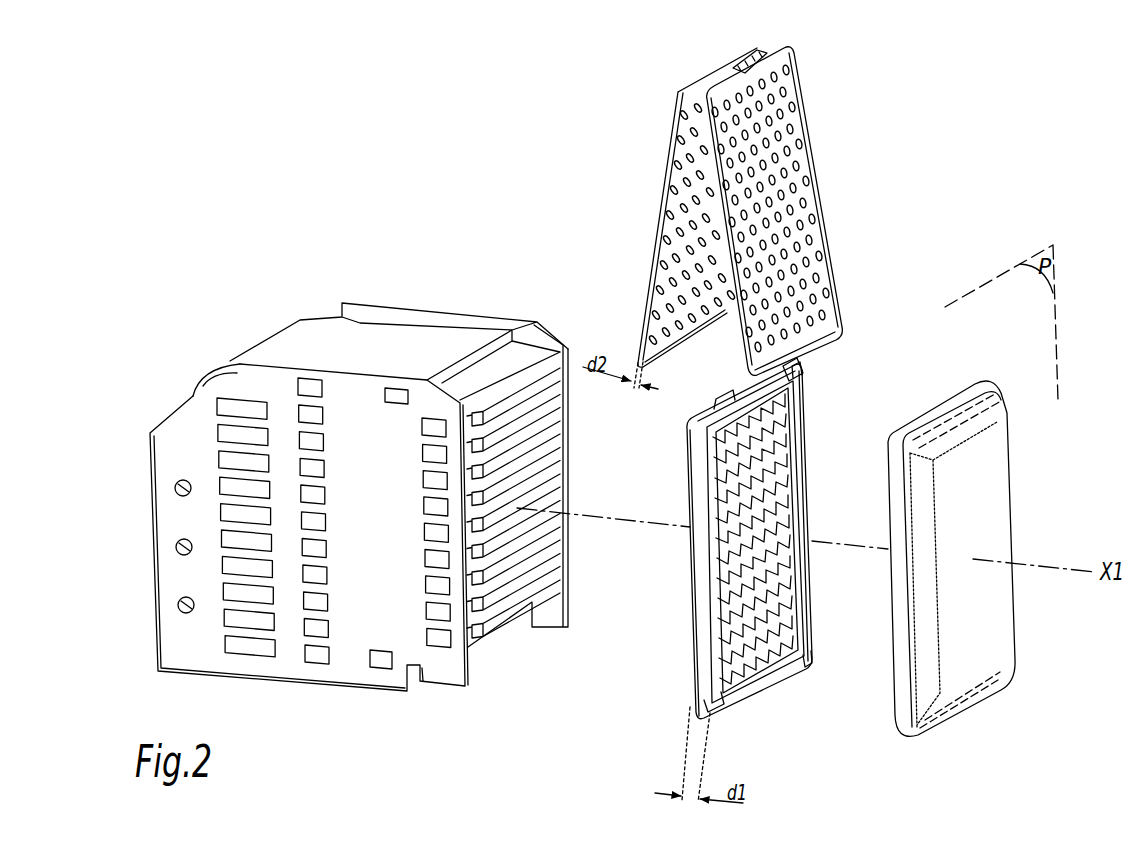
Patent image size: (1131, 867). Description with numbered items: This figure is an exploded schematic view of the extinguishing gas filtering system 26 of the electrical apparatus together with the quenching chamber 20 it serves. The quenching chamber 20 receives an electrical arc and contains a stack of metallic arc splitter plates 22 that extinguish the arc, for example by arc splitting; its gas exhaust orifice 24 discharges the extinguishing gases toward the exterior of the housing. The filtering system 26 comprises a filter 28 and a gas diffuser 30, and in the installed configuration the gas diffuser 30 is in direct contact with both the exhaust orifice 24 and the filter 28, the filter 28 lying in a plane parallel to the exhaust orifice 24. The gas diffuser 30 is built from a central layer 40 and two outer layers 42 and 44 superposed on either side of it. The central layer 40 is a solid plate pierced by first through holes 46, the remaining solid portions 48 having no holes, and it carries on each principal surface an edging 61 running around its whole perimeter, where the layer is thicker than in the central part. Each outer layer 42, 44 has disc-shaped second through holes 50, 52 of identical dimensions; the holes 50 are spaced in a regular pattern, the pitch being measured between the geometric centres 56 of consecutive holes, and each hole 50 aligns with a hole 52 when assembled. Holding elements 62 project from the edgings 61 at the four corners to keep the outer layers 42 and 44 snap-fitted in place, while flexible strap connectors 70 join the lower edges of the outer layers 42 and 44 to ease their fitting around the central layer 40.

The quenching chamber 20 is at (245, 305).
The arc splitter plates 22 is at (487, 573).
The gas exhaust orifice 24 is at (593, 568).
The filtering system 26 is at (983, 63).
The filter 28 is at (990, 453).
The gas diffuser 30 is at (838, 137).
The central layer 40 is at (760, 686).
The outer layer 42 is at (671, 127).
The outer layer 44 is at (812, 188).
The first through holes 46 is at (720, 453).
The solid portions 48 is at (770, 430).
The second through holes 50 is at (663, 227).
The second through holes 52 is at (832, 252).
The geometric centres 56 is at (770, 613).
The edging 61 is at (810, 497).
The holding element 62 is at (707, 407).
The flexible connector 70 is at (717, 70).